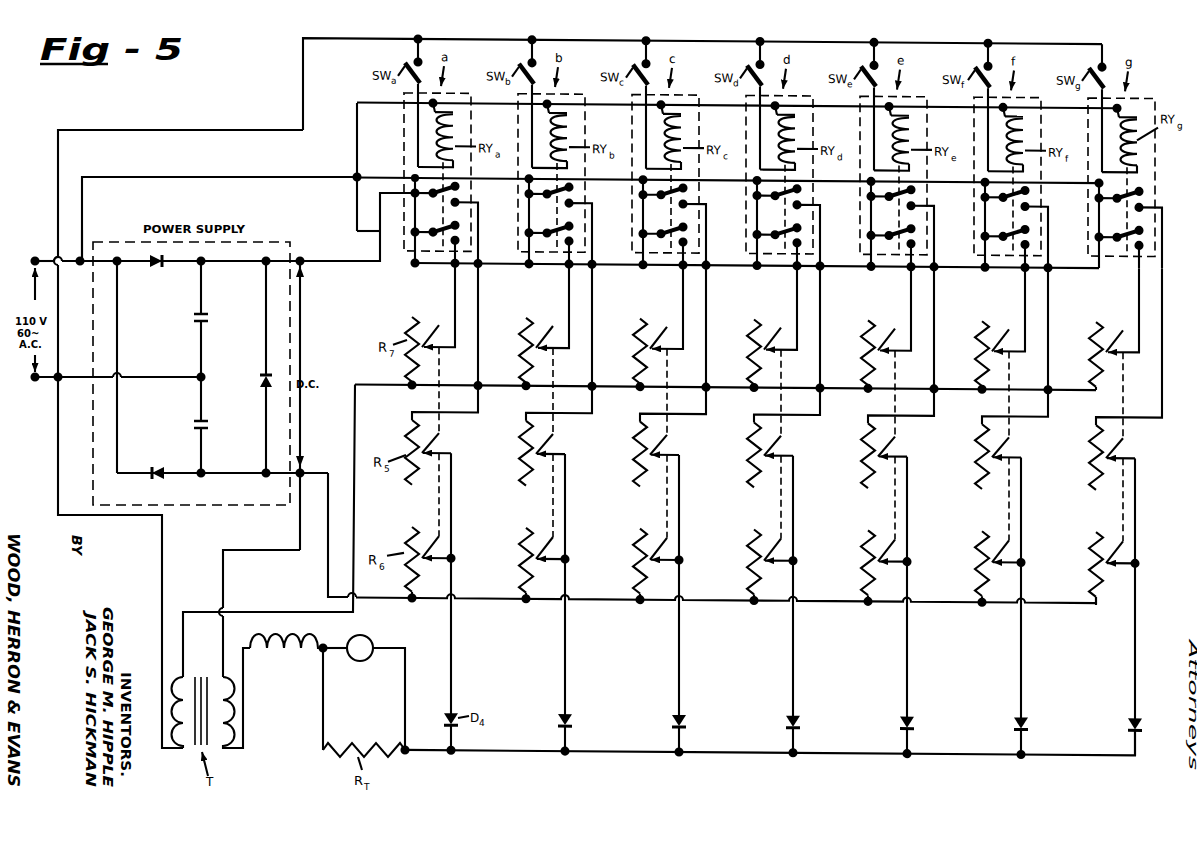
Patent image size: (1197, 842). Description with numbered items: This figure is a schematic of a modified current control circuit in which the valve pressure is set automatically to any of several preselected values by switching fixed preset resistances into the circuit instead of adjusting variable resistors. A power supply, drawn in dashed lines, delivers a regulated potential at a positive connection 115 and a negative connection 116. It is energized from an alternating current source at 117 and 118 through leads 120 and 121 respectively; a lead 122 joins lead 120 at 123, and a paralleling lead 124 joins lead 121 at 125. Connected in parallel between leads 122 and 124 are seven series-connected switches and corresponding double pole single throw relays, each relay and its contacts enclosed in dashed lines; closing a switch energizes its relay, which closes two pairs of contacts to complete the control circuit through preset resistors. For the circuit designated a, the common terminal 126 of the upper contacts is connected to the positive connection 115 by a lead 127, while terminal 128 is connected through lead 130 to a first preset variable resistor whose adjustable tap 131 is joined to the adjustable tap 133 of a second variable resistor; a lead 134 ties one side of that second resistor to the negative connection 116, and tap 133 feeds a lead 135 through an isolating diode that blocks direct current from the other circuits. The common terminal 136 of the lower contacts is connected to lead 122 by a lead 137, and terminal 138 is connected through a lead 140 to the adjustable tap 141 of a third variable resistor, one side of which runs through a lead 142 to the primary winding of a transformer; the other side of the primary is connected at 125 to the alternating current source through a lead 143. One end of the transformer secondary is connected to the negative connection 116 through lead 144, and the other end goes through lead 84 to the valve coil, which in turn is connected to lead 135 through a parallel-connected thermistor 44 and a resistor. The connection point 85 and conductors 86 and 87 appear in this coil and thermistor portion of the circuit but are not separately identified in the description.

The thermistor 44 is at (364, 661).
The lead 84 is at (244, 720).
The junction 85 is at (325, 646).
The conductor 86 is at (321, 717).
The conductor 87 is at (403, 704).
The positive power supply connection 115 is at (303, 260).
The negative power supply connection 116 is at (304, 472).
The alternating current source connection 117 is at (35, 257).
The alternating current source connection 118 is at (32, 378).
The lead 120 is at (79, 264).
The lead 121 is at (84, 376).
The lead 122 is at (83, 193).
The connection point 123 is at (83, 258).
The paralleling lead 124 is at (305, 112).
The connection point 125 is at (59, 379).
The common terminal 126 is at (412, 191).
The lead 127 is at (505, 177).
The terminal 128 is at (458, 199).
The lead 130 is at (479, 298).
The adjustable tap 131 is at (433, 457).
The adjustable tap 133 is at (439, 562).
The lead 134 is at (380, 597).
The lead 135 is at (513, 752).
The common terminal 136 is at (416, 229).
The lead 137 is at (356, 221).
The terminal 138 is at (458, 238).
The lead 140 is at (453, 298).
The adjustable tap 141 is at (436, 350).
The lead 142 is at (367, 388).
The lead 143 is at (56, 461).
The lead 144 is at (226, 578).